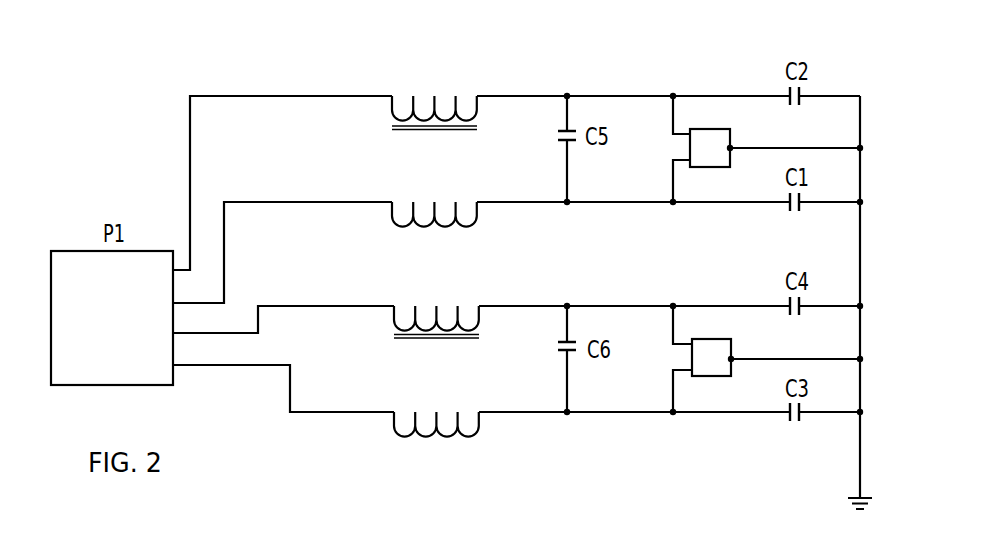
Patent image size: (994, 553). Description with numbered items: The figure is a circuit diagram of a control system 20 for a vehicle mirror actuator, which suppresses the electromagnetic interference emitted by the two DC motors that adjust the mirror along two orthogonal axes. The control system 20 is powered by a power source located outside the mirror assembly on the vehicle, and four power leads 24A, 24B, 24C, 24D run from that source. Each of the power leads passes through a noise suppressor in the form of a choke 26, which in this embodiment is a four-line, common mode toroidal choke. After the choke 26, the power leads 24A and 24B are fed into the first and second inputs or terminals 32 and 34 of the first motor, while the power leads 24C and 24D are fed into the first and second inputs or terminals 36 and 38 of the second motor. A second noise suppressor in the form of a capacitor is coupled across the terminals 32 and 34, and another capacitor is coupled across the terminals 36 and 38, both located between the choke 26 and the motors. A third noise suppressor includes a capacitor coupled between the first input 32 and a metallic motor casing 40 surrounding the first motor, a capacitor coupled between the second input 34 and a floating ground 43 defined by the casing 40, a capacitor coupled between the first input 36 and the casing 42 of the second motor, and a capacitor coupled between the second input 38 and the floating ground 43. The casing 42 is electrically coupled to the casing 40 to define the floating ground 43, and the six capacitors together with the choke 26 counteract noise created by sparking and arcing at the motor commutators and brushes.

The control system 20 is at (128, 157).
The power lead 24A is at (312, 200).
The power lead 24B is at (260, 95).
The power lead 24C is at (373, 410).
The power lead 24D is at (322, 305).
The choke 26 is at (437, 80).
The first input or terminal of first motor 32 is at (670, 165).
The second input or terminal of first motor 34 is at (670, 112).
The first input or terminal of second motor 36 is at (671, 376).
The second input or terminal of second motor 38 is at (671, 323).
The motor casing 40 is at (733, 146).
The casing of second motor 42 is at (734, 357).
The floating ground 43 is at (852, 497).